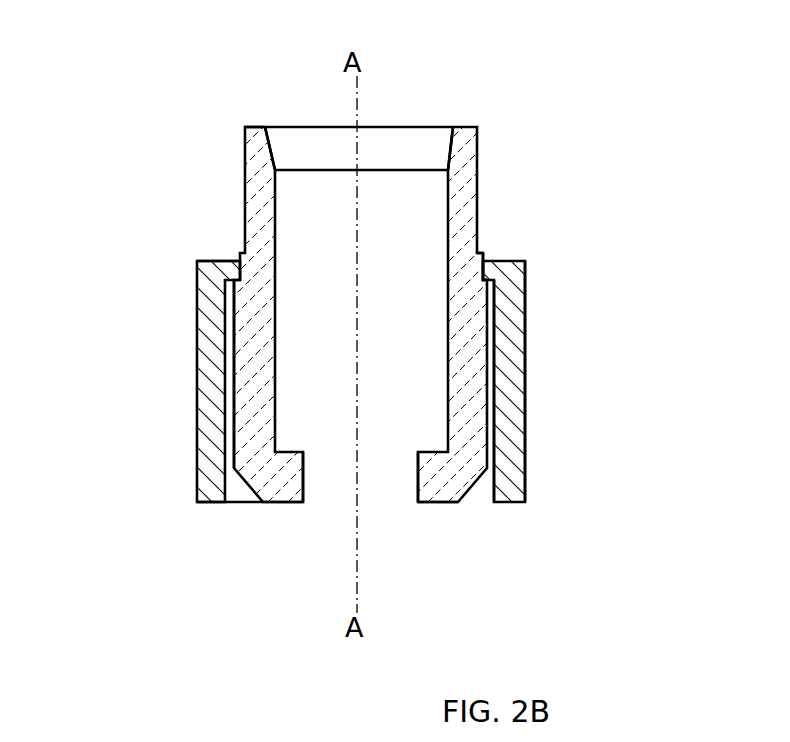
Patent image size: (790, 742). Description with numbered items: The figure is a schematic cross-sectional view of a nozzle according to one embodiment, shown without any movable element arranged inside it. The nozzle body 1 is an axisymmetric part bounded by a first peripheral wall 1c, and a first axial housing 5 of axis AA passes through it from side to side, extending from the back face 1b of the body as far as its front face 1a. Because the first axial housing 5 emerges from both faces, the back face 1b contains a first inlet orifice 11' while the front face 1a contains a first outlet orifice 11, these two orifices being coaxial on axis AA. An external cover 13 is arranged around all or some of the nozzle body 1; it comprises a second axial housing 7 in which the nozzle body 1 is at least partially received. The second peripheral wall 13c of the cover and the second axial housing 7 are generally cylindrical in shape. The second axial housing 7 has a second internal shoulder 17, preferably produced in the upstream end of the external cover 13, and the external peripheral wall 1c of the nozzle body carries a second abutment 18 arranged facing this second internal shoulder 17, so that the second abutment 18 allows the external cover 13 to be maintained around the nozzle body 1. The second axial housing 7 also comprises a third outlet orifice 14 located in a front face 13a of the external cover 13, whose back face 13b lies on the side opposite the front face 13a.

The nozzle body 1 is at (258, 227).
The front face 1a is at (445, 513).
The back face 1b is at (250, 120).
The first peripheral wall 1c is at (260, 373).
The first axial housing 5 is at (383, 277).
The second axial housing 7 is at (496, 490).
The first outlet orifice 11 is at (377, 565).
The first inlet orifice 11' is at (379, 108).
The external cover 13 is at (508, 283).
The front face 13a is at (196, 509).
The back face 13b is at (210, 258).
The second peripheral wall 13c is at (508, 372).
The third outlet orifice 14 is at (243, 514).
The second internal shoulder 17 is at (494, 269).
The second abutment 18 is at (494, 269).